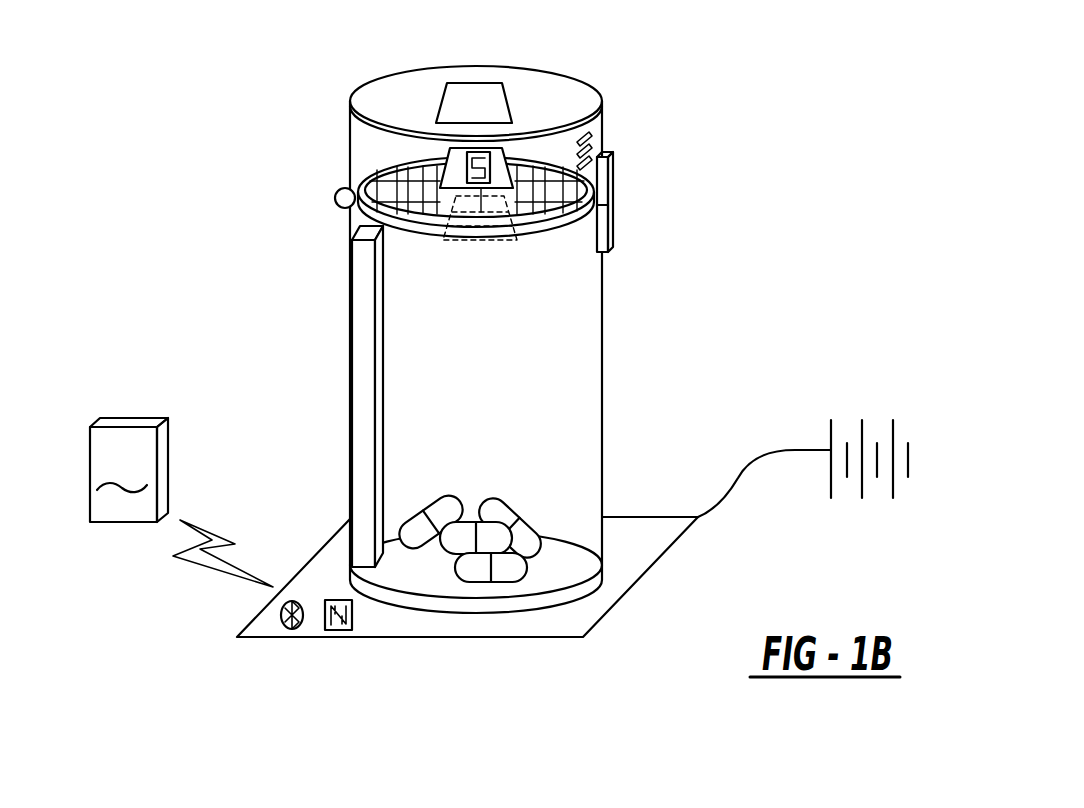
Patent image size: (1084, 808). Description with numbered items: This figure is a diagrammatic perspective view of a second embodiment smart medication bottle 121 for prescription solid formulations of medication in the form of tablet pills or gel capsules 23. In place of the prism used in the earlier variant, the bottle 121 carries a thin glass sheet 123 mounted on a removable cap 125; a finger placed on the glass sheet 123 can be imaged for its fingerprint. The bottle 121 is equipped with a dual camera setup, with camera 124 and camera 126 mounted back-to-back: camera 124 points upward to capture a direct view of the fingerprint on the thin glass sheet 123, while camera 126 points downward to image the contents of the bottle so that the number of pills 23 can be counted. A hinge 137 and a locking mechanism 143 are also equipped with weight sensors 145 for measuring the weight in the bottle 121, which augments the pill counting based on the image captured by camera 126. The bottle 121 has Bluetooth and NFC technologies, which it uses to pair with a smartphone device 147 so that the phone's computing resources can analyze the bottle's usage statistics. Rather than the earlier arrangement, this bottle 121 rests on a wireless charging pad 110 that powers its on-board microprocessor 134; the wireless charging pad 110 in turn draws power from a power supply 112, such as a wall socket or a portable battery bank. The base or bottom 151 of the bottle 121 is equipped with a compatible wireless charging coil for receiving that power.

The bottle 121 is at (300, 344).
The base or bottom 151 is at (467, 605).
The removable cap 125 is at (398, 92).
The thin glass sheet 123 is at (477, 98).
The on-board microprocessor 134 is at (487, 205).
The camera 124 is at (478, 177).
The camera 126 is at (482, 153).
The hinge 137 is at (336, 204).
The locking mechanism 143 is at (602, 182).
The weight sensors 145 is at (412, 575).
The pills 23 is at (497, 507).
The wireless charging pad 110 is at (588, 612).
The power supply 112 is at (846, 394).
The smartphone device 147 is at (181, 502).